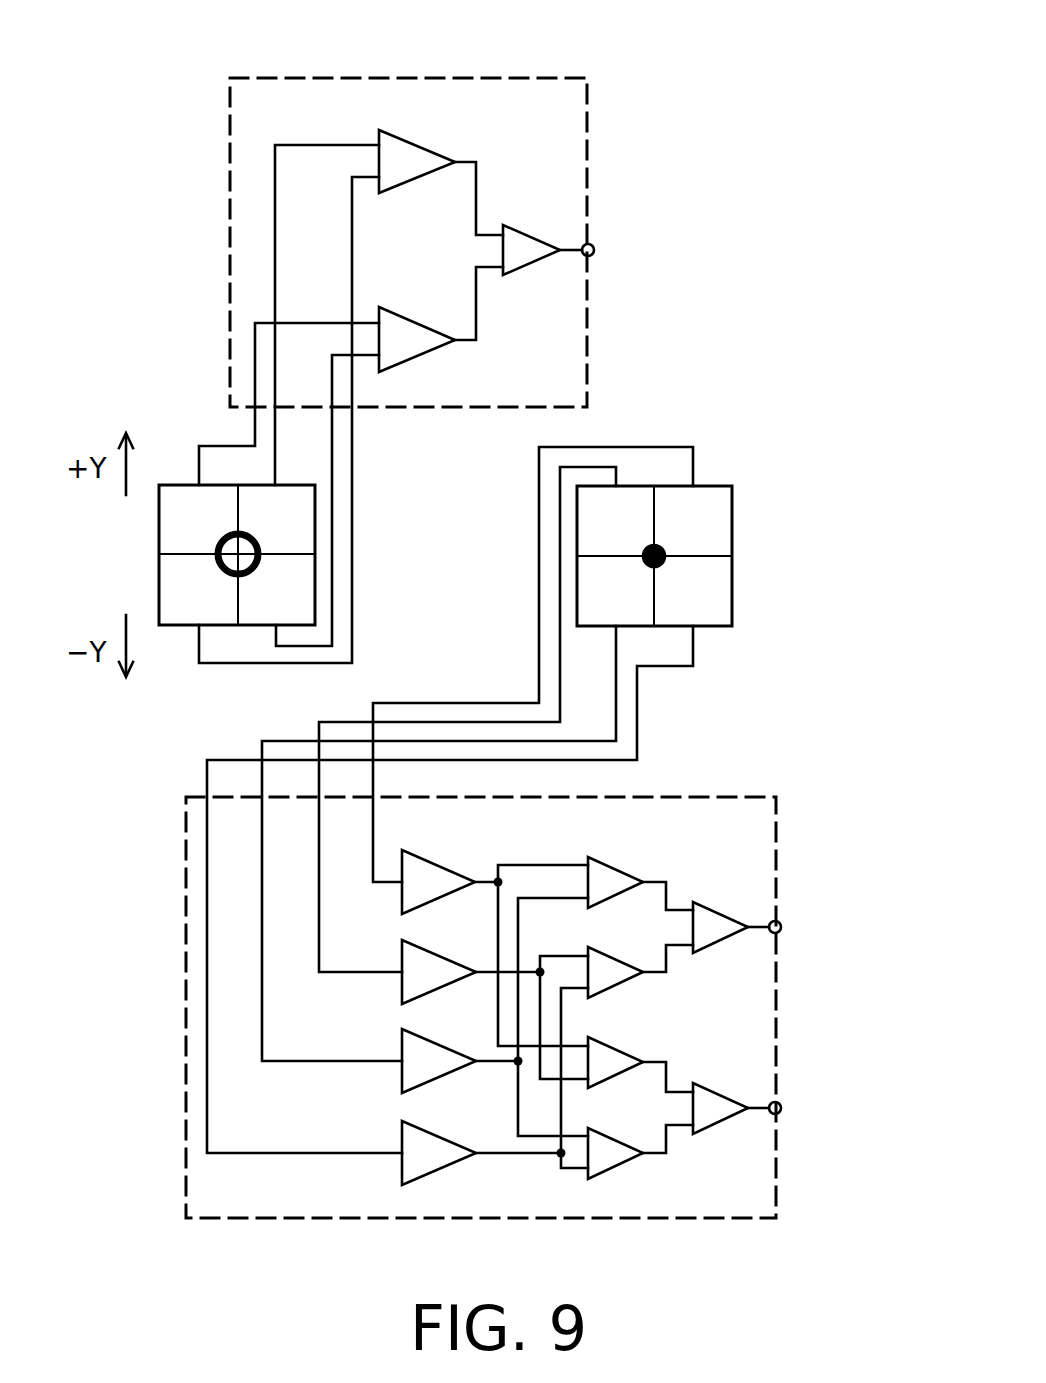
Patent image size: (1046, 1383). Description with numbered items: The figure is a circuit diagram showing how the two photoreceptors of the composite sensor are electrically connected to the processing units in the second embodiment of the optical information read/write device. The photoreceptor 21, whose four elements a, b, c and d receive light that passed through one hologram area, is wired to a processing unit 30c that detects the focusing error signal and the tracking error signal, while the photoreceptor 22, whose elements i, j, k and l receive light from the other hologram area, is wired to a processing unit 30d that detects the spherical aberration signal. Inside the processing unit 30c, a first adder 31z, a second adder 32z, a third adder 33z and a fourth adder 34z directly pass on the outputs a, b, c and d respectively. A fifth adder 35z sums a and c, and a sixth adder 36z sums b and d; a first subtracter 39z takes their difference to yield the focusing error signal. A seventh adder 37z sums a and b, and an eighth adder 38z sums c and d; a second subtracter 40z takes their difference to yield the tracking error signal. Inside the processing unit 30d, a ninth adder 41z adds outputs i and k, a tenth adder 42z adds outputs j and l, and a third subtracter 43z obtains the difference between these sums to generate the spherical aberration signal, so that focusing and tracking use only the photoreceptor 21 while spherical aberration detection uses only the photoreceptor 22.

The photoreceptor 21 is at (732, 543).
The photoreceptor 22 is at (159, 545).
The processing unit 30c is at (737, 797).
The processing unit 30d is at (545, 78).
The first adder 31z is at (478, 848).
The second adder 32z is at (478, 938).
The third adder 33z is at (478, 1027).
The fourth adder 34z is at (478, 1119).
The fifth adder 35z is at (655, 848).
The sixth adder 36z is at (655, 938).
The seventh adder 37z is at (655, 1028).
The eighth adder 38z is at (655, 1119).
The first subtracter 39z is at (752, 893).
The second subtracter 40z is at (752, 1074).
The ninth adder 41z is at (455, 124).
The tenth adder 42z is at (455, 302).
The third subtracter 43z is at (560, 210).